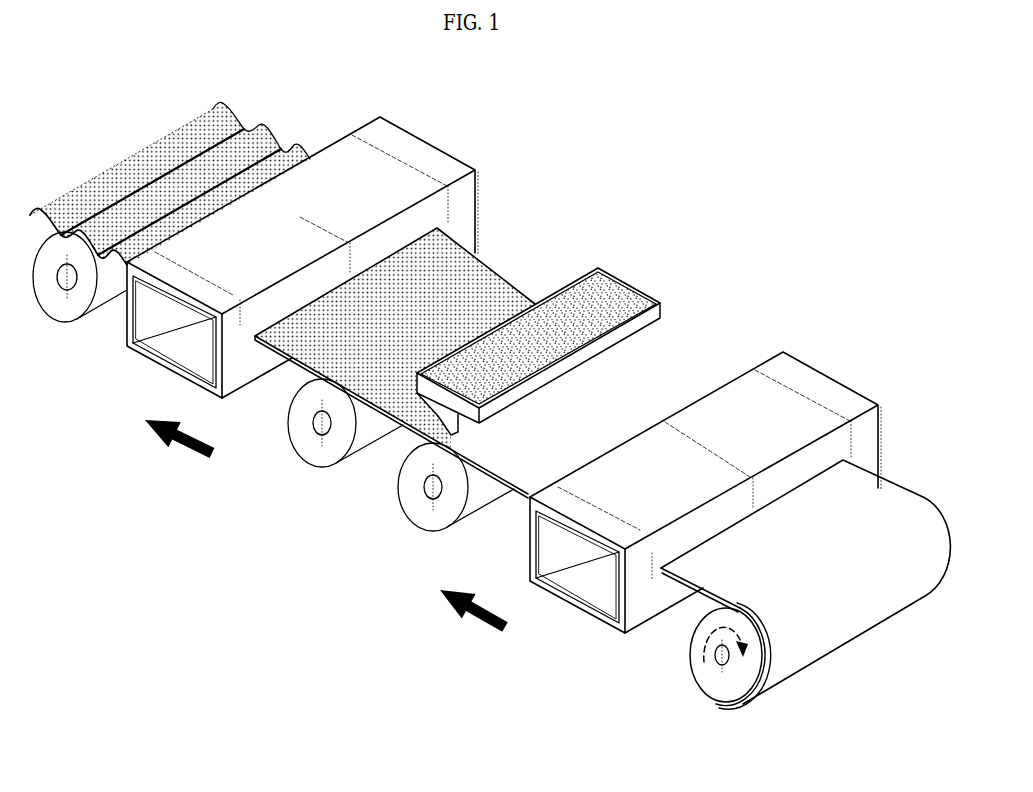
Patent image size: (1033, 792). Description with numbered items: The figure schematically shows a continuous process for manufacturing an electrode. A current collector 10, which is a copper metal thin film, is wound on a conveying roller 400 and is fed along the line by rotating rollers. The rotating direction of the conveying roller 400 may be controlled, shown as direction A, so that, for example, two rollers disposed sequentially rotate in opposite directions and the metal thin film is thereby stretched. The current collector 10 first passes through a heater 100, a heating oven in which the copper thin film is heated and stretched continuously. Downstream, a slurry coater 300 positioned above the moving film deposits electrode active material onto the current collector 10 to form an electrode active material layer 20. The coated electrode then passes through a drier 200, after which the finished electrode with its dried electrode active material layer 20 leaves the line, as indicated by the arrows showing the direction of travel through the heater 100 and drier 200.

The current collector (metal thin film) 10 is at (900, 512).
The electrode active material layer 20 is at (498, 288).
The heater 100 is at (825, 377).
The drier 200 is at (422, 148).
The slurry coater 300 is at (617, 276).
The conveying roller 400 is at (715, 683).
The direction A is at (697, 648).